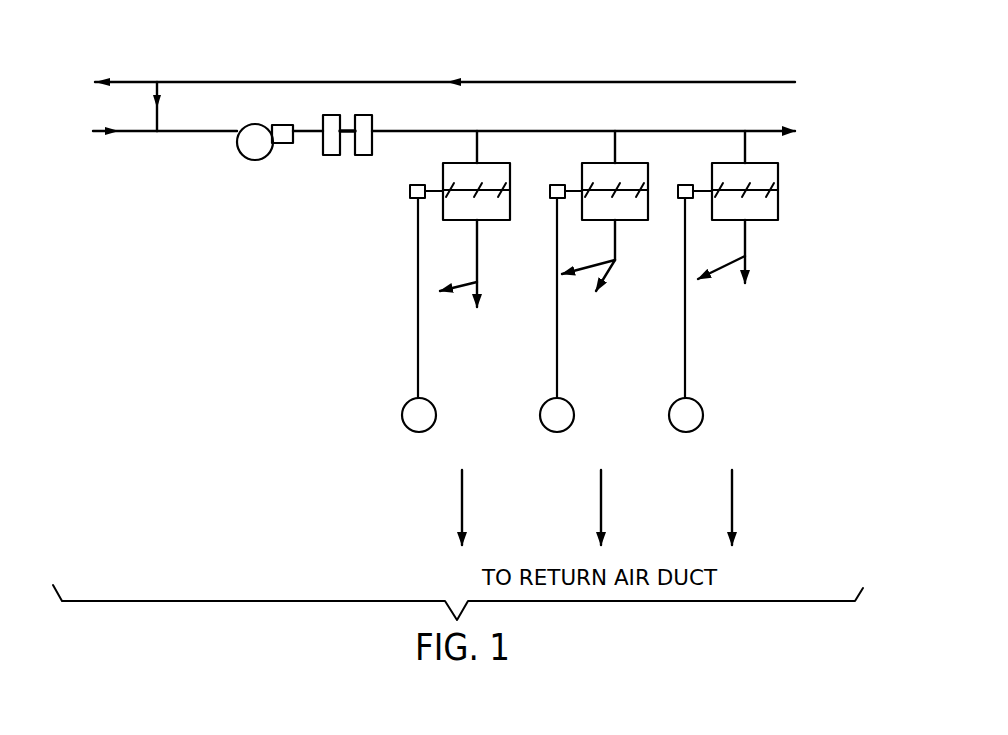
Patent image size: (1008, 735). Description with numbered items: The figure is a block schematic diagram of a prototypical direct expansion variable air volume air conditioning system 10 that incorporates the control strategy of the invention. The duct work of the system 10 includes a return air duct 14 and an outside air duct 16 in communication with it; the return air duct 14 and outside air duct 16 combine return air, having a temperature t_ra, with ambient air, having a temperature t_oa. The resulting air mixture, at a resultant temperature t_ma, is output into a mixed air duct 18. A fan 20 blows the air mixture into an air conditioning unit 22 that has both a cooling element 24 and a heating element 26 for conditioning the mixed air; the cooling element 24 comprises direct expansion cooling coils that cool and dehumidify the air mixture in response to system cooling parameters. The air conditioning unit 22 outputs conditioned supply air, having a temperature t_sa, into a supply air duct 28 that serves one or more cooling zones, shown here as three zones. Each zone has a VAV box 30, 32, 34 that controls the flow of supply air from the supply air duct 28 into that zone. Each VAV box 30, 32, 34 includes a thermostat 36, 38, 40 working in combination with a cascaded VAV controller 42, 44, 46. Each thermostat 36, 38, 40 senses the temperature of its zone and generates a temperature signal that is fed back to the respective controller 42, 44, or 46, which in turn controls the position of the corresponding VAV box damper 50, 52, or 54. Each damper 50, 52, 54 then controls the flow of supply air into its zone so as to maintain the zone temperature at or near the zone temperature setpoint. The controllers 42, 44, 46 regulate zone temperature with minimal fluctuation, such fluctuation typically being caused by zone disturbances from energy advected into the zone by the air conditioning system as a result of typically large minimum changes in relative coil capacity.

The DX VAV air conditioning system 10 is at (214, 280).
The return air duct 14 is at (287, 81).
The outside air duct 16 is at (105, 133).
The mixed air duct 18 is at (178, 128).
The fan 20 is at (256, 161).
The air conditioning unit 22 is at (347, 114).
The cooling element 24 is at (320, 146).
The heating element 26 is at (378, 146).
The supply air duct 28 is at (455, 130).
The VAV box 30 is at (482, 162).
The VAV box 32 is at (598, 162).
The VAV box 34 is at (730, 162).
The thermostat 36 is at (415, 433).
The thermostat 38 is at (553, 433).
The thermostat 40 is at (683, 433).
The cascaded VAV controller 42 is at (408, 192).
The cascaded VAV controller 44 is at (548, 195).
The cascaded VAV controller 46 is at (677, 197).
The VAV box damper 50 is at (476, 198).
The VAV box damper 52 is at (610, 197).
The VAV box damper 54 is at (772, 195).